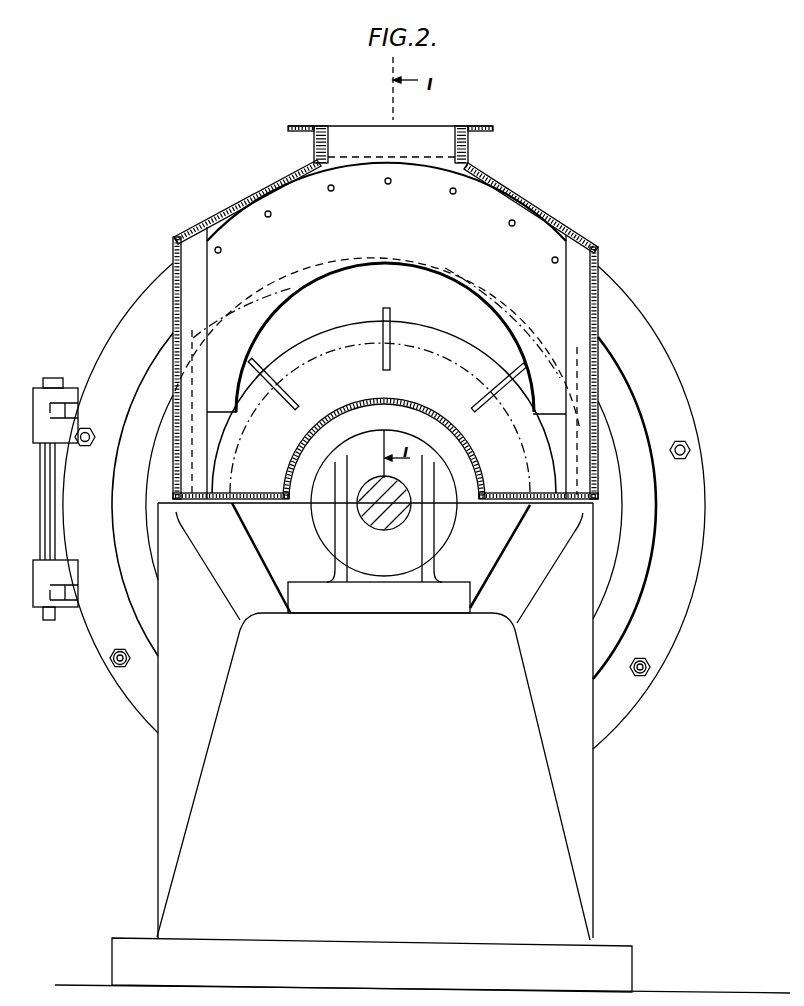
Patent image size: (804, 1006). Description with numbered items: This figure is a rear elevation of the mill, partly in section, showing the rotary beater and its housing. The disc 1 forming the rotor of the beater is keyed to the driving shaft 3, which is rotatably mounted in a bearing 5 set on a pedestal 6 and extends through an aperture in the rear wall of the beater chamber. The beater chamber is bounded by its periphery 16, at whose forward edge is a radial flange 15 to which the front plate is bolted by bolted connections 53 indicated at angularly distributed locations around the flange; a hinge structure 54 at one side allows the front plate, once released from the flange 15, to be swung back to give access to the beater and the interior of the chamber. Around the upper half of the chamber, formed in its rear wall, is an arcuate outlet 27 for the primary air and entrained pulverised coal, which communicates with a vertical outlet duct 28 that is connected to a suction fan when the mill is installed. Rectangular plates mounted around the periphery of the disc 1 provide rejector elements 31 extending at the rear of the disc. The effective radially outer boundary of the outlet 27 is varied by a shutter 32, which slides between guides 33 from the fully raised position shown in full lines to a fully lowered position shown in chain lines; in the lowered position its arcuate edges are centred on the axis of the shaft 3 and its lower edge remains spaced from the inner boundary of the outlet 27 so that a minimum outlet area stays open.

The disc 1 is at (407, 328).
The driving shaft 3 is at (395, 513).
The bearing 5 is at (442, 505).
The pedestal 6 is at (482, 662).
The radial flange 15 is at (664, 400).
The periphery 16 is at (625, 595).
The arcuate outlet 27 is at (372, 286).
The vertical outlet duct 28 is at (467, 165).
The rejector elements 31 is at (398, 361).
The shutter 32 is at (502, 273).
The guides 33 is at (572, 290).
The bolted connections 53 is at (113, 665).
The hinge structure 54 is at (46, 379).